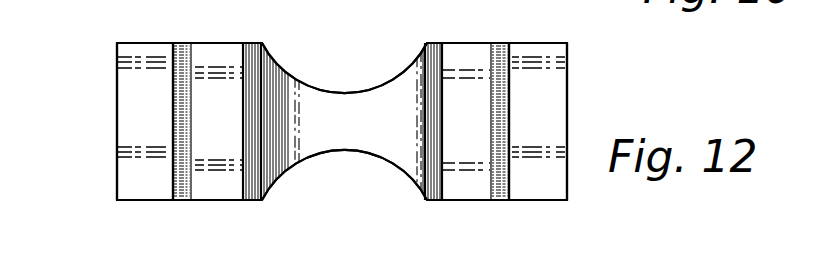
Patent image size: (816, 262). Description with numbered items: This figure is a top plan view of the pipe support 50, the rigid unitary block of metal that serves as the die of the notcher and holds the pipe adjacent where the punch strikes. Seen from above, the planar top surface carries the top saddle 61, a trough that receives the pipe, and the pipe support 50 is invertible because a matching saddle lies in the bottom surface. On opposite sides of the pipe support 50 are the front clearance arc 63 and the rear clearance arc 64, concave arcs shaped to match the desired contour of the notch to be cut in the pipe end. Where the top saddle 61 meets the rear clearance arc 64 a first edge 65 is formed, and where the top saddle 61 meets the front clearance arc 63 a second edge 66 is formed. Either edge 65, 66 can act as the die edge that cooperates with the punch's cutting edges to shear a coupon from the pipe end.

The pipe support 50 is at (83, 60).
The top saddle 61 is at (346, 137).
The front clearance arc 63 is at (362, 58).
The rear clearance arc 64 is at (321, 180).
The first edge 65 is at (348, 152).
The second edge 66 is at (328, 91).